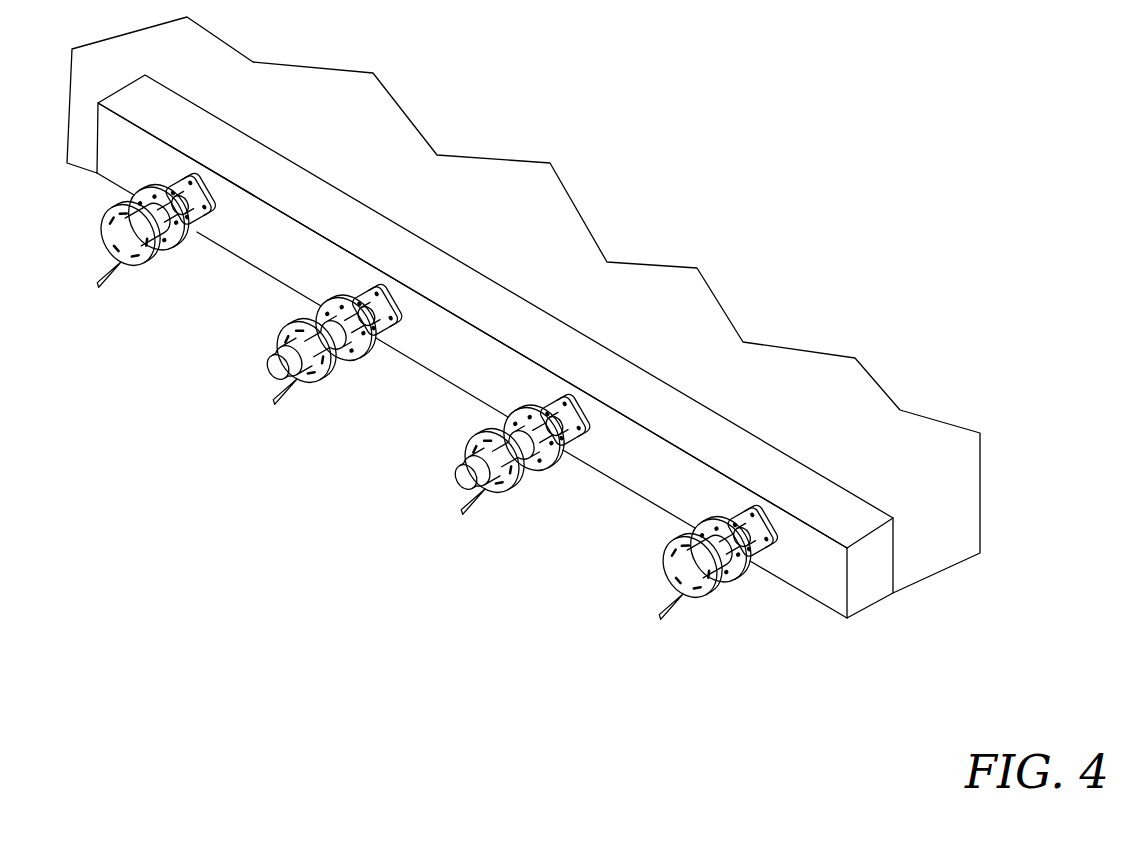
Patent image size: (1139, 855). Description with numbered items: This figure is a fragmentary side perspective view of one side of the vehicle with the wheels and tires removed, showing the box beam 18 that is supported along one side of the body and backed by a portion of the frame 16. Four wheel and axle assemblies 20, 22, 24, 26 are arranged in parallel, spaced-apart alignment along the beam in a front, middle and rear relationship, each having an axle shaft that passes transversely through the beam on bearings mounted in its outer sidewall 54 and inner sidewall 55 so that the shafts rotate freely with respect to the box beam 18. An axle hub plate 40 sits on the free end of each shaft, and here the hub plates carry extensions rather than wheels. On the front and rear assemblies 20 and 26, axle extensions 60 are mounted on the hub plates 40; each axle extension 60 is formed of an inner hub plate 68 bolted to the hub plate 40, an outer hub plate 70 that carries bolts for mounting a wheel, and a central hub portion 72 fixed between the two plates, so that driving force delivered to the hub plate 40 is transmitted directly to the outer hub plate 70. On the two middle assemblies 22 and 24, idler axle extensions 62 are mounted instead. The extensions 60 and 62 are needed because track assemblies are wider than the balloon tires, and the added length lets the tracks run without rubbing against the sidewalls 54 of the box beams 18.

The support frame plate 16 is at (636, 298).
The box beam 18 is at (533, 364).
The wheel and axle assembly 20 is at (202, 232).
The wheel and axle assembly 22 is at (379, 330).
The wheel and axle assembly 24 is at (565, 445).
The wheel and axle assembly 26 is at (752, 555).
The axle hub plate 40 is at (765, 516).
The outer sidewall 54 is at (458, 352).
The inner sidewall 55 is at (895, 558).
The axle extension 60 is at (98, 285).
The idler axle extension 62 is at (274, 402).
The inner hub plate 68 is at (690, 522).
The outer hub plate 70 is at (672, 567).
The central hub portion 72 is at (718, 552).